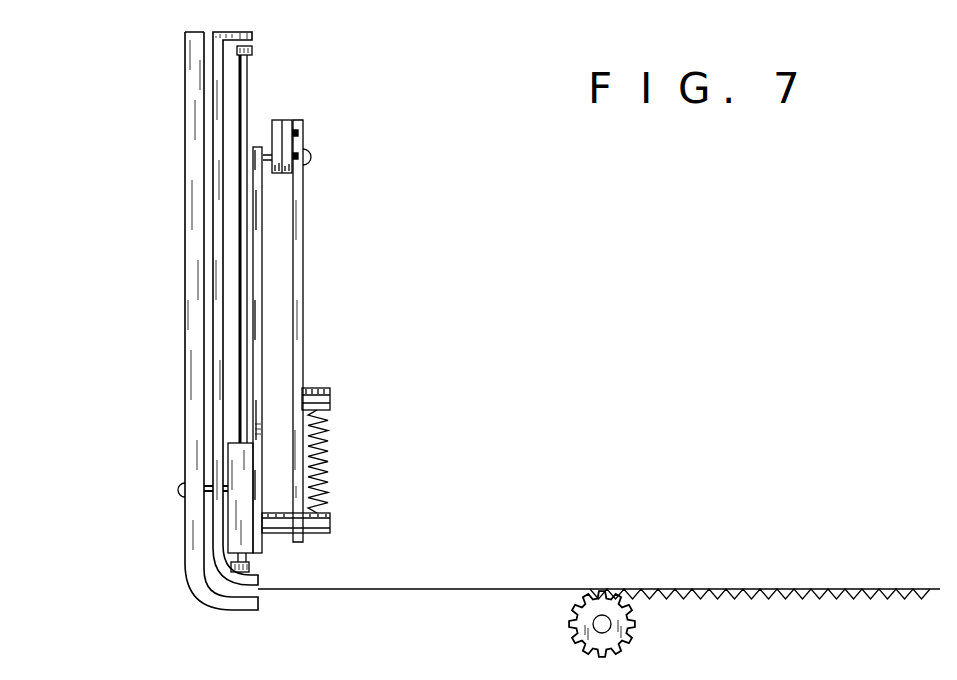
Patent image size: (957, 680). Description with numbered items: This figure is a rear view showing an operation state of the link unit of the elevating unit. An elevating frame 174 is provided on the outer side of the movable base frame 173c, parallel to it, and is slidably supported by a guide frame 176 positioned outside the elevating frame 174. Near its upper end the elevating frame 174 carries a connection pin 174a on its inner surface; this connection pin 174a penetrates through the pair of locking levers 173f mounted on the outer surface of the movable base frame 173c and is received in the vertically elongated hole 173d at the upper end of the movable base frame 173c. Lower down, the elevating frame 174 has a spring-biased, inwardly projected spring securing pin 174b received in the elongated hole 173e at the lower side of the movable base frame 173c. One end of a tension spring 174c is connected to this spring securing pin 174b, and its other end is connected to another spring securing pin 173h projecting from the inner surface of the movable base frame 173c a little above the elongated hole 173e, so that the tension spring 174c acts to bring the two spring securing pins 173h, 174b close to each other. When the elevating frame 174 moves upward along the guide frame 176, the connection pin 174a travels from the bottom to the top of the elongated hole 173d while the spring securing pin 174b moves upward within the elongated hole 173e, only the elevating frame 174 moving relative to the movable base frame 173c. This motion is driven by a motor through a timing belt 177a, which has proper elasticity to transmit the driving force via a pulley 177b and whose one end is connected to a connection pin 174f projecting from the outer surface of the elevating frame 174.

The guide frame 176 is at (246, 72).
The elevating frame 174 is at (262, 290).
The locking levers 173f is at (277, 118).
The movable base frame 173c is at (303, 228).
The elongated hole 173d is at (305, 143).
The connection pin 174a is at (312, 160).
The spring securing pin 173h is at (315, 390).
The tension spring 174c is at (325, 450).
The elongated hole 173e is at (305, 492).
The spring securing pin 174b is at (325, 524).
The connection pin 174f is at (178, 487).
The timing belt 177a is at (408, 590).
The pulley 177b is at (630, 632).